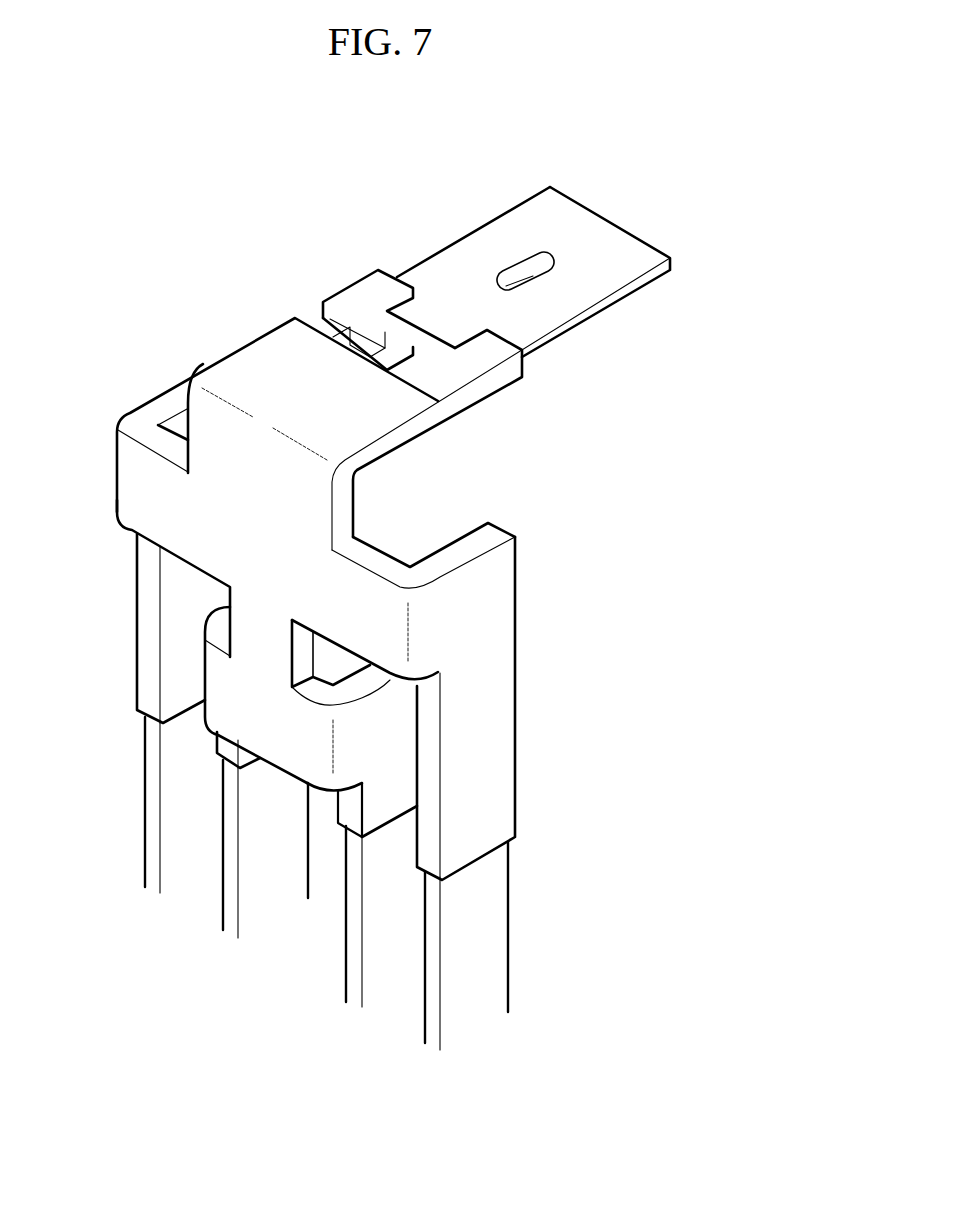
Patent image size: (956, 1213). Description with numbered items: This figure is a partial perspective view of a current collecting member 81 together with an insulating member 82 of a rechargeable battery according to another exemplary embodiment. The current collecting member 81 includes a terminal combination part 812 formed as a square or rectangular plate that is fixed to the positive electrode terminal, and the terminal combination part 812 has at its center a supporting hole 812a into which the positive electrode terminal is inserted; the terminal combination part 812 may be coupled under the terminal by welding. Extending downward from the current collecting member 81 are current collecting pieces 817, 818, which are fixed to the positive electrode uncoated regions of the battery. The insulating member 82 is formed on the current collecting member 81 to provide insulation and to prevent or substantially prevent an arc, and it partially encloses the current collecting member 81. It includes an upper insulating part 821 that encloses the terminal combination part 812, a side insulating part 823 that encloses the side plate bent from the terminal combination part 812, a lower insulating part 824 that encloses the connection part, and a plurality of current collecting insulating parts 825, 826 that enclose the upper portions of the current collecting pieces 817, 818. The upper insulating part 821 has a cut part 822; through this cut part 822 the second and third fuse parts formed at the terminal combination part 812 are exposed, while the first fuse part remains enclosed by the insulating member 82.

The current collecting member 81 is at (512, 204).
The terminal combination part 812 is at (475, 252).
The supporting hole 812a is at (537, 280).
The insulating member 82 is at (516, 615).
The upper insulating part 821 is at (420, 380).
The cut part 822 is at (344, 318).
The side insulating part 823 is at (233, 423).
The lower insulating part 824 is at (263, 640).
The current collecting insulating part 825 is at (483, 700).
The current collecting insulating part 826 is at (390, 792).
The current collecting piece 817 is at (467, 907).
The current collecting piece 818 is at (383, 957).